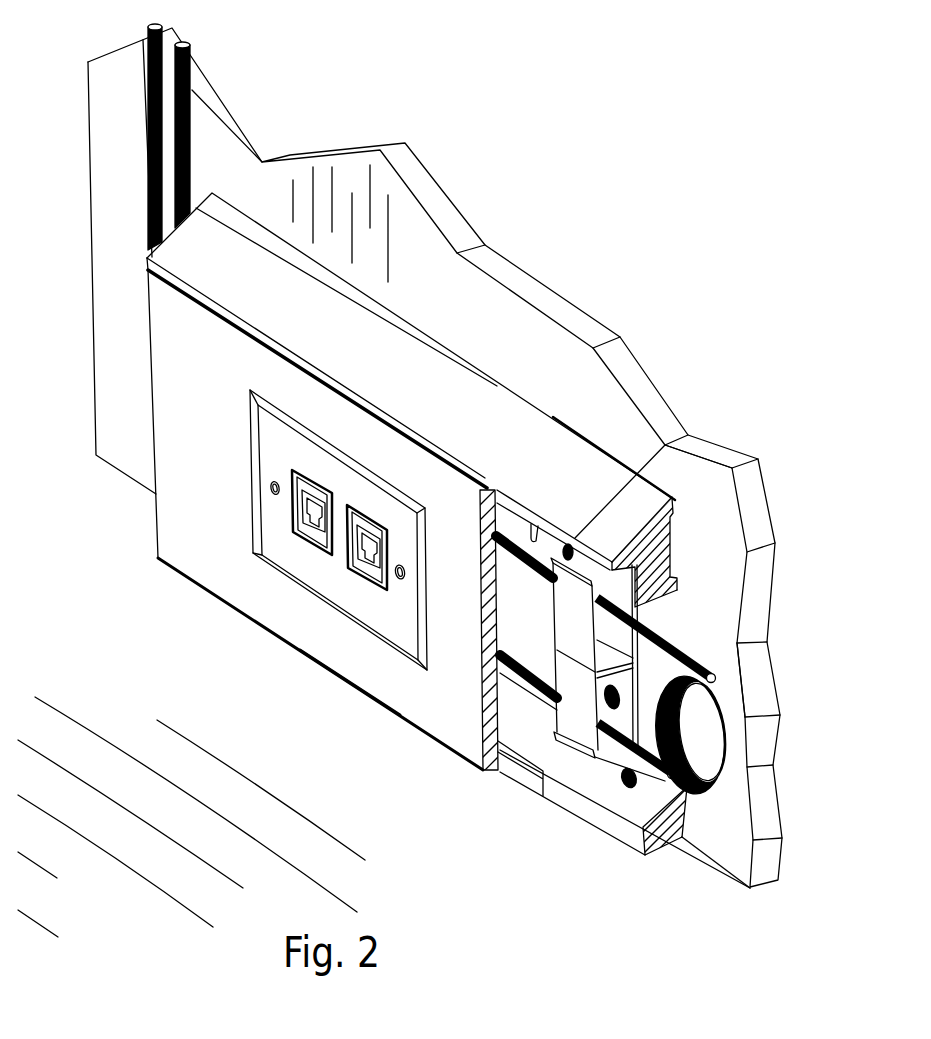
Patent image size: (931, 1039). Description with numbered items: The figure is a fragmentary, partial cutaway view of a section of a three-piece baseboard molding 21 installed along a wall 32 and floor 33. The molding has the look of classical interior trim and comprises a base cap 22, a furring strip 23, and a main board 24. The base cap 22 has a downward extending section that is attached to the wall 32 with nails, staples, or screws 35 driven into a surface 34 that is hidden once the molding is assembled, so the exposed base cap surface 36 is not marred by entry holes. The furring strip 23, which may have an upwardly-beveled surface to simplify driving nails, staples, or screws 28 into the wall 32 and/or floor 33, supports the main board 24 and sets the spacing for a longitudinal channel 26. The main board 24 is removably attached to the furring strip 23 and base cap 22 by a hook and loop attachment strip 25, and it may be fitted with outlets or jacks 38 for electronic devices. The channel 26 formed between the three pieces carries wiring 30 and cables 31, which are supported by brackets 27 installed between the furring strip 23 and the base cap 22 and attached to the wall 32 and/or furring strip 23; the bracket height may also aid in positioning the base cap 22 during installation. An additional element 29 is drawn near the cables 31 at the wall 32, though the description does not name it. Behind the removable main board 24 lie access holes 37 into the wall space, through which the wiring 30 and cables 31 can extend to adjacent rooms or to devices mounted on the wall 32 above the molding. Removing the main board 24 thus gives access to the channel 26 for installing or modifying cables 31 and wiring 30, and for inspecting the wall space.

The baseboard molding 21 is at (69, 829).
The base cap 22 is at (677, 533).
The furring strip 23 is at (643, 854).
The main board 24 is at (435, 547).
The hook and loop attachment strip 25 is at (512, 517).
The channel 26 is at (499, 656).
The brackets 27 is at (645, 628).
The screws 28 is at (627, 785).
The wall opening 29 is at (733, 648).
The wiring 30 is at (700, 752).
The cables 31 is at (712, 672).
The wall 32 is at (463, 323).
The floor 33 is at (360, 774).
The surface 34 is at (566, 545).
The screws 35 is at (632, 485).
The exposed base cap surface 36 is at (582, 470).
The access holes 37 is at (723, 722).
The jacks 38 is at (337, 597).